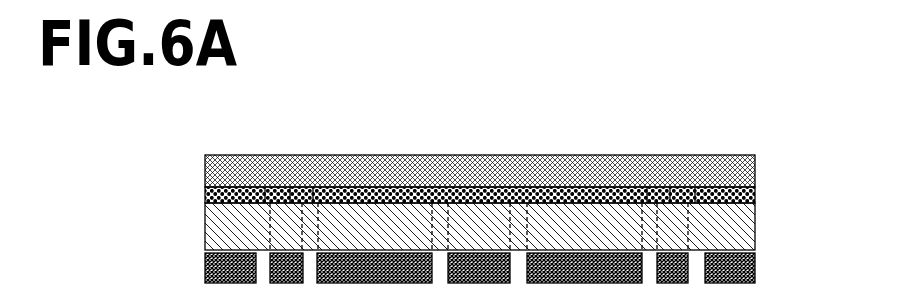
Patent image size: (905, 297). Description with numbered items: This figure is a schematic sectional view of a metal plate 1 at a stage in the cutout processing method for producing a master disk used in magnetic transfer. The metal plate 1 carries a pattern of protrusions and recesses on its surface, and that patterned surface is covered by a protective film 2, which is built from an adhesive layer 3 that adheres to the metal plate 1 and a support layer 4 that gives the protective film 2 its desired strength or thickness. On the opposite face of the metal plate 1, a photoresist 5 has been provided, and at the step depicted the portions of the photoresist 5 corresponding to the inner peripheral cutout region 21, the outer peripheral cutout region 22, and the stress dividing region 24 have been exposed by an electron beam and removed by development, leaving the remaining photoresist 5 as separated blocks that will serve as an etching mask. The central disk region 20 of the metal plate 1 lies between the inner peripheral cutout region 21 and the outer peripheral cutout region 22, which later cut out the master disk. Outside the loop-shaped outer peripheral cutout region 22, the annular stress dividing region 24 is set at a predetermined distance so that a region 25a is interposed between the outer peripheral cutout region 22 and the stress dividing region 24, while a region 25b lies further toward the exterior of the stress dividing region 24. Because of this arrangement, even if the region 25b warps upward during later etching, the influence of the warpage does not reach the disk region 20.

The metal plate 1 is at (755, 228).
The protective film 2 is at (523, 182).
The adhesive layer 3 is at (507, 199).
The support layer 4 is at (755, 165).
The photoresist 5 is at (755, 265).
The disk region 20 is at (379, 208).
The inner peripheral cutout region 21 is at (528, 210).
The outer peripheral cutout region 22 is at (310, 205).
The stress dividing region 24 is at (262, 205).
The region interposed between outer peripheral cutout region and stress dividing reg 25a is at (288, 205).
The region toward the exterior of the stress dividing region 25b is at (233, 205).